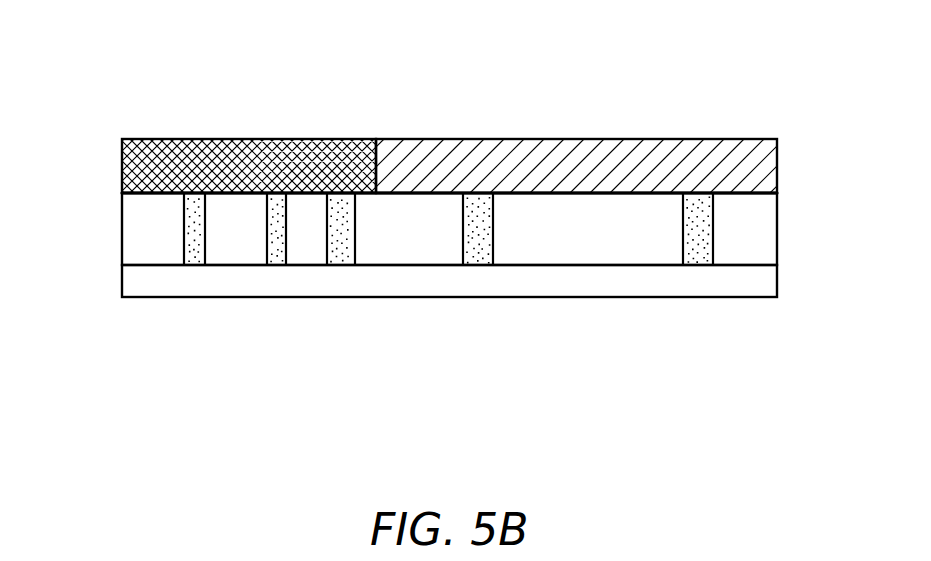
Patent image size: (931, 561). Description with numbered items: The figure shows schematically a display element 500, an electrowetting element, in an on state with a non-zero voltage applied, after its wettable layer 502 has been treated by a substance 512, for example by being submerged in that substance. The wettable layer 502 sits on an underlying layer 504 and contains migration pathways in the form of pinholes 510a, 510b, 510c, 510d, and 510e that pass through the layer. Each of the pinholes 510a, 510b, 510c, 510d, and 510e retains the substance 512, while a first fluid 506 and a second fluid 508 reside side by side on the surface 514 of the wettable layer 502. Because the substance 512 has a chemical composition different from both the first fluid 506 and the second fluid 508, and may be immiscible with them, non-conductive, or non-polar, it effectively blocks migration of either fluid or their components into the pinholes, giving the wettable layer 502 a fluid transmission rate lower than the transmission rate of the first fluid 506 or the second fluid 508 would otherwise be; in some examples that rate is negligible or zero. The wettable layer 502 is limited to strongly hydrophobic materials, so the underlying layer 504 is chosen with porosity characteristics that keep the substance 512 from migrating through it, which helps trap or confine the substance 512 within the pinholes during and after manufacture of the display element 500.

The display element 500 is at (729, 88).
The wettable layer 502 is at (135, 237).
The underlying layer 504 is at (127, 283).
The first fluid 506 is at (523, 152).
The second fluid 508 is at (312, 152).
The pinhole 510a is at (195, 257).
The pinhole 510b is at (277, 257).
The pinhole 510c is at (343, 250).
The pinhole 510d is at (479, 257).
The pinhole 510e is at (700, 257).
The substance 512 is at (274, 200).
The surface 514 is at (136, 196).